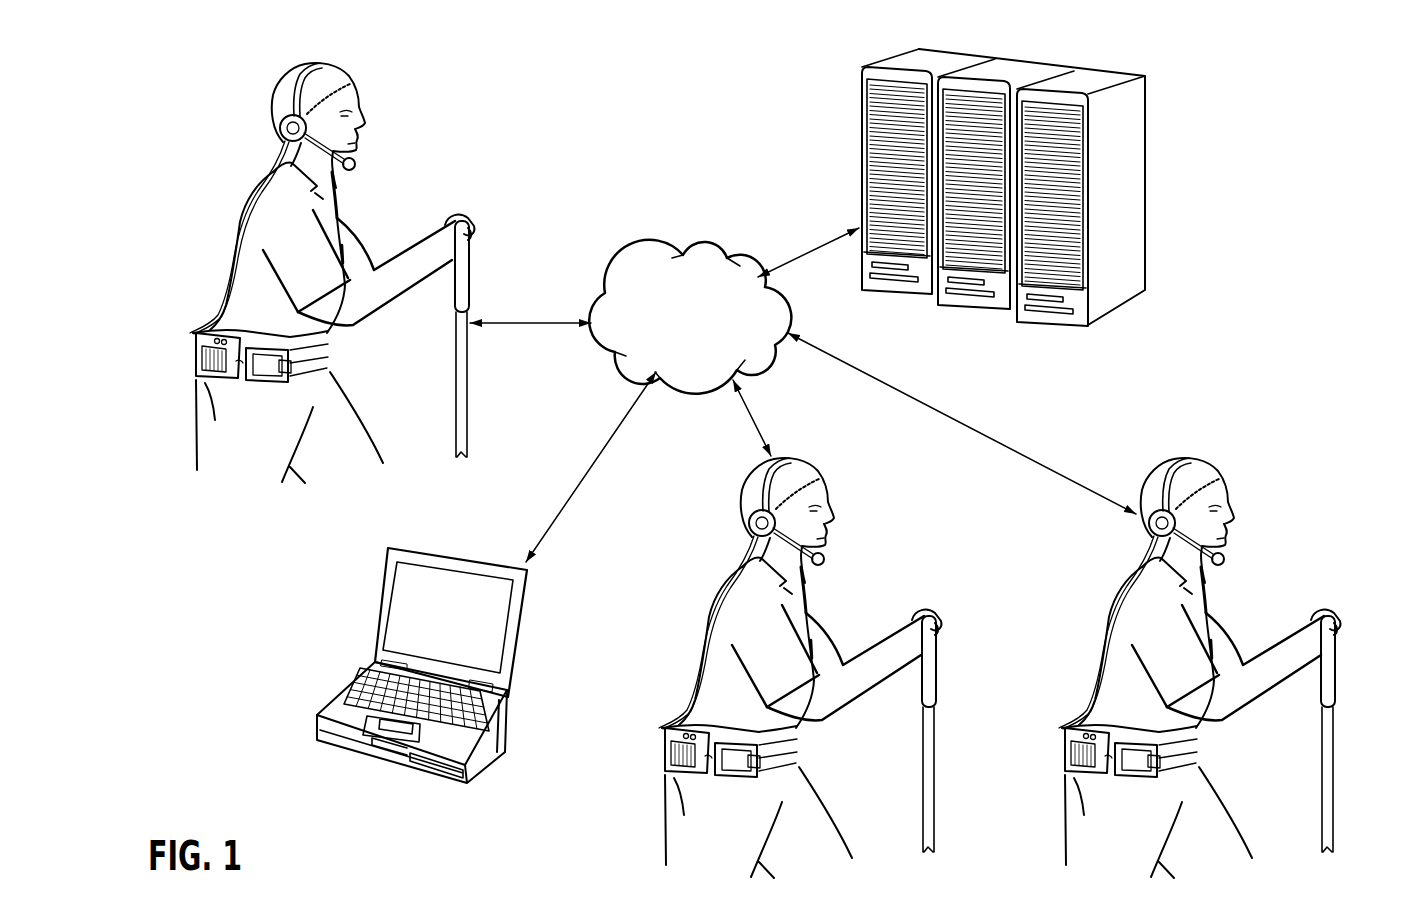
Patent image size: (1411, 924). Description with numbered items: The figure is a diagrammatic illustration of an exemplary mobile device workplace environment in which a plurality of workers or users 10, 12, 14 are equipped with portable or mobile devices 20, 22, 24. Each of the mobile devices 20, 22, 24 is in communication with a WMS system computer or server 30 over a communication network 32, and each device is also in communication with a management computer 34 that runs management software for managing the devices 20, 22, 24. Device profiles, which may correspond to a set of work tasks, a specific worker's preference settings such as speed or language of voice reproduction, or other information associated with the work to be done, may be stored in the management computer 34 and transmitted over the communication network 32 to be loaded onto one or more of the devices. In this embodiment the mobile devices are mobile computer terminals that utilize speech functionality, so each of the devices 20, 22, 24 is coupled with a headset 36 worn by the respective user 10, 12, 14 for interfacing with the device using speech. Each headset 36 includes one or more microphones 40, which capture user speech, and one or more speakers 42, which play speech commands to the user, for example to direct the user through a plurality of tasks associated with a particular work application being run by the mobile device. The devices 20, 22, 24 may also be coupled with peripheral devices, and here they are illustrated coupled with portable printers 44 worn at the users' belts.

The user 10 is at (379, 65).
The user 12 is at (856, 477).
The user 14 is at (1251, 463).
The mobile device 20 is at (190, 362).
The mobile device 22 is at (658, 750).
The mobile device 24 is at (1058, 750).
The server 30 is at (1148, 128).
The communication network 32 is at (704, 238).
The management computer 34 is at (382, 612).
The headset 36 is at (285, 94).
The microphone 40 is at (356, 165).
The speaker 42 is at (281, 130).
The portable printer 44 is at (264, 386).